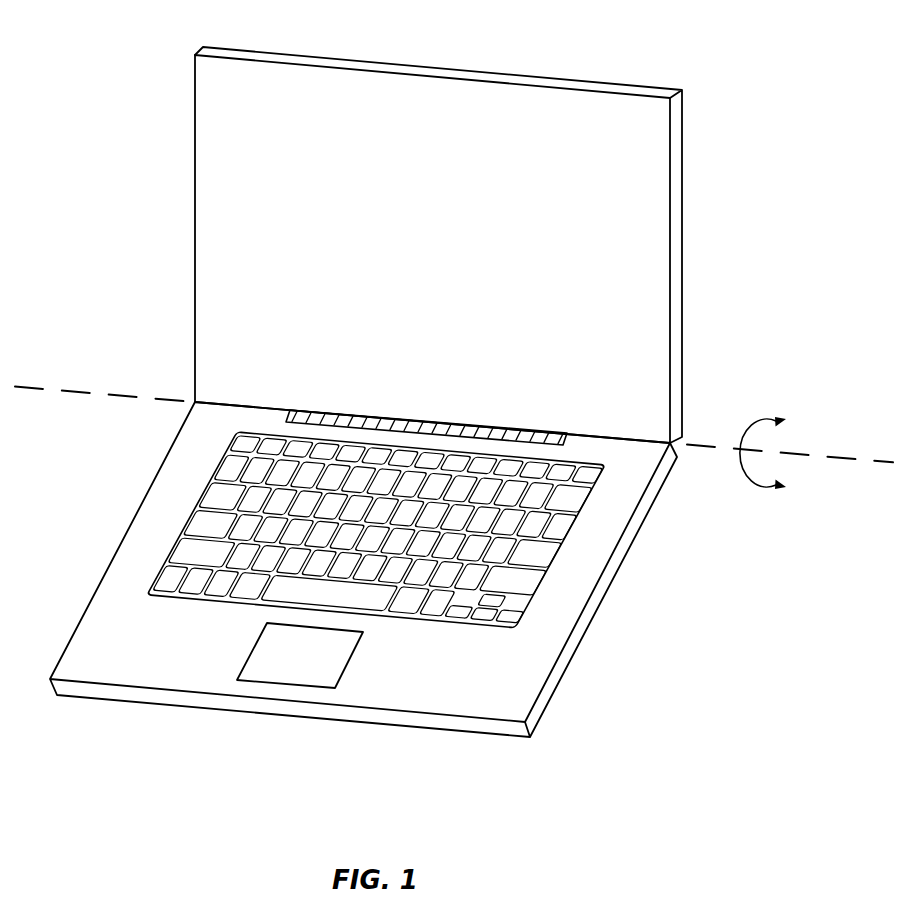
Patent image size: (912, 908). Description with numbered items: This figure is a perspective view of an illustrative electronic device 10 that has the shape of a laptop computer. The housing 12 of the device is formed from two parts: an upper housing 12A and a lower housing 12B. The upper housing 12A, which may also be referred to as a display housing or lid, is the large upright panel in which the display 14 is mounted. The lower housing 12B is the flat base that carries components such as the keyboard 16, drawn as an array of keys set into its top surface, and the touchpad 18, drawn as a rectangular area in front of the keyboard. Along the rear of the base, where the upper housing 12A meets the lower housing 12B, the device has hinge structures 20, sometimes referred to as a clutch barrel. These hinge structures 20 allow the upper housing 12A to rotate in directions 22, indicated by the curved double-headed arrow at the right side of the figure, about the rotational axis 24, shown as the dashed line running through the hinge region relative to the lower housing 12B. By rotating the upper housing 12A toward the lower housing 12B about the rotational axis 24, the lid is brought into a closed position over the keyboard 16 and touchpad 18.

The electronic device 10 is at (747, 56).
The housing 12 is at (391, 410).
The upper housing 12A is at (428, 245).
The lower housing 12B is at (173, 407).
The display 14 is at (588, 237).
The keyboard 16 is at (530, 548).
The touchpad 18 is at (350, 667).
The hinge structures 20 is at (539, 428).
The directions 22 is at (758, 487).
The rotational axis 24 is at (73, 388).